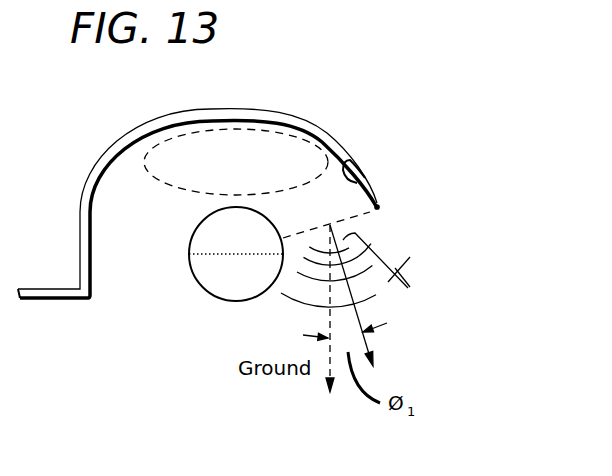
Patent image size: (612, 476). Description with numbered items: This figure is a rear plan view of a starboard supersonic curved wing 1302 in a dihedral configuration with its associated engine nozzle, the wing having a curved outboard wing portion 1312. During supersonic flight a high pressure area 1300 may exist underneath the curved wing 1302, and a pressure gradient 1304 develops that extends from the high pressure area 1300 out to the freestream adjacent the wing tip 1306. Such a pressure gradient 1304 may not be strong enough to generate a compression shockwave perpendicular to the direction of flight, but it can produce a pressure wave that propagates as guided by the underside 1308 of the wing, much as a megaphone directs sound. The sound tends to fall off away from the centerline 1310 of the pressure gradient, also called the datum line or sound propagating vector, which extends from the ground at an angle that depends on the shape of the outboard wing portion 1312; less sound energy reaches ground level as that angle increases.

The high pressure area 1300 is at (260, 176).
The curved wing 1302 is at (128, 128).
The pressure gradient 1304 is at (378, 258).
The wing tip 1306 is at (376, 209).
The underside 1308 is at (357, 183).
The centerline 1310 is at (360, 312).
The outboard wing portion 1312 is at (310, 122).